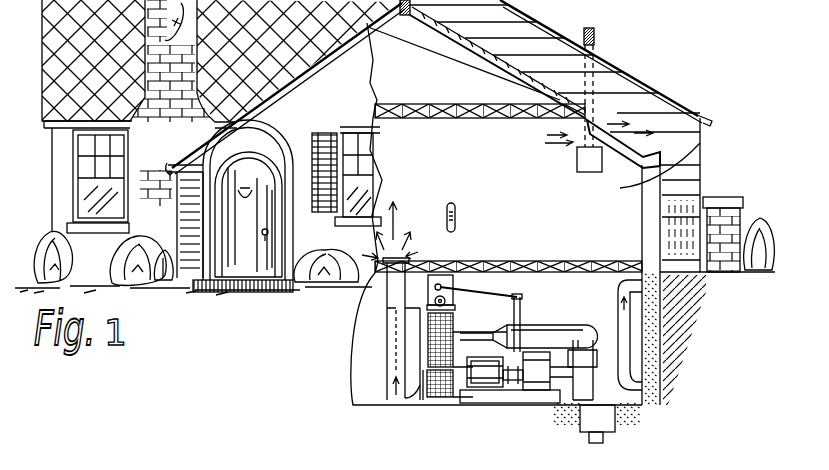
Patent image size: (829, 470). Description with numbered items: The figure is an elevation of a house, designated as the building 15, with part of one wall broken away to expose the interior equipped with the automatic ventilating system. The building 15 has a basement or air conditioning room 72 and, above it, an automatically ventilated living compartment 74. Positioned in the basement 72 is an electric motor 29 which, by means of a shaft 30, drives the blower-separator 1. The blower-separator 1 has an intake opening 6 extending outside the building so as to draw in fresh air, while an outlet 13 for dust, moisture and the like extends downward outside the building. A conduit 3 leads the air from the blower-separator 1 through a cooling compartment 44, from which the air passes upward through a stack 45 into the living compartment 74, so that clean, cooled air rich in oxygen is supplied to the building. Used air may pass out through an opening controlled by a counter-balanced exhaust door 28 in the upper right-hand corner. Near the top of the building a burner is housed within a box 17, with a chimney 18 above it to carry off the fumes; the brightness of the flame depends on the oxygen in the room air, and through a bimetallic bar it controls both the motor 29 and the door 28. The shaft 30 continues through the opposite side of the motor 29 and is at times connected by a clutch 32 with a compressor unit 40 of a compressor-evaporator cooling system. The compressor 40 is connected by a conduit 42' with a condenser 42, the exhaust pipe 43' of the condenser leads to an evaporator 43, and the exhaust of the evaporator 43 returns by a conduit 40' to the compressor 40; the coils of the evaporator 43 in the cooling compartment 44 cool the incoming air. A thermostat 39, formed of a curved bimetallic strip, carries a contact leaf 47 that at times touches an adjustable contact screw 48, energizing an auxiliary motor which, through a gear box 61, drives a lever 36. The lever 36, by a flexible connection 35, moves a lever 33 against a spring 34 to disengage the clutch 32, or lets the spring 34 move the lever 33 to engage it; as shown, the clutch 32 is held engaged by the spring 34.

The blower-separator 1 is at (600, 388).
The conduit 3 is at (578, 333).
The intake opening 6 is at (668, 302).
The outlet 13 is at (578, 434).
The building 15 is at (642, 75).
The box 17 is at (577, 157).
The chimney 18 is at (596, 37).
The counter-balanced exhaust door 28 is at (608, 130).
The electric motor 29 is at (545, 395).
The shaft 30 is at (572, 400).
The clutch 32 is at (535, 385).
The lever 33 is at (520, 302).
The spring 34 is at (528, 341).
The flexible connection 35 is at (497, 294).
The lever 36 is at (452, 278).
The thermostat 39 is at (456, 213).
The compressor unit 40 is at (498, 401).
The conduit 40' is at (486, 348).
The condenser 42 is at (438, 401).
The conduit 42' is at (462, 399).
The evaporator 43 is at (467, 333).
The exhaust pipe 43' is at (393, 354).
The cooling compartment 44 is at (417, 400).
The stack 45 is at (397, 331).
The contact leaf 47 is at (187, 469).
The adjustable contact screw 48 is at (128, 469).
The gear box 61 is at (424, 264).
The basement 72 is at (362, 380).
The living compartment 74 is at (668, 160).